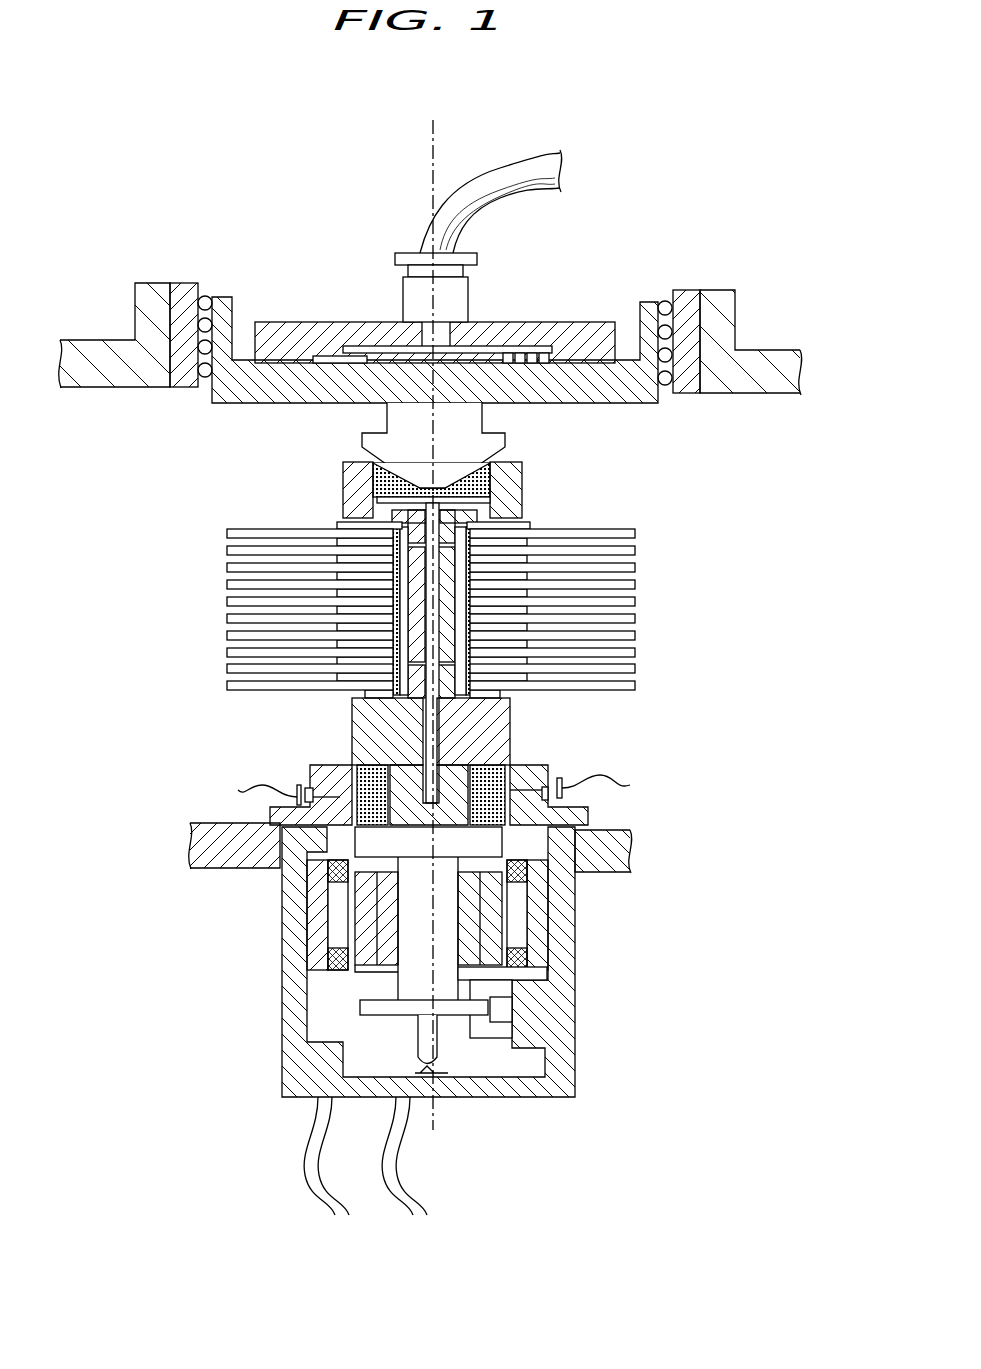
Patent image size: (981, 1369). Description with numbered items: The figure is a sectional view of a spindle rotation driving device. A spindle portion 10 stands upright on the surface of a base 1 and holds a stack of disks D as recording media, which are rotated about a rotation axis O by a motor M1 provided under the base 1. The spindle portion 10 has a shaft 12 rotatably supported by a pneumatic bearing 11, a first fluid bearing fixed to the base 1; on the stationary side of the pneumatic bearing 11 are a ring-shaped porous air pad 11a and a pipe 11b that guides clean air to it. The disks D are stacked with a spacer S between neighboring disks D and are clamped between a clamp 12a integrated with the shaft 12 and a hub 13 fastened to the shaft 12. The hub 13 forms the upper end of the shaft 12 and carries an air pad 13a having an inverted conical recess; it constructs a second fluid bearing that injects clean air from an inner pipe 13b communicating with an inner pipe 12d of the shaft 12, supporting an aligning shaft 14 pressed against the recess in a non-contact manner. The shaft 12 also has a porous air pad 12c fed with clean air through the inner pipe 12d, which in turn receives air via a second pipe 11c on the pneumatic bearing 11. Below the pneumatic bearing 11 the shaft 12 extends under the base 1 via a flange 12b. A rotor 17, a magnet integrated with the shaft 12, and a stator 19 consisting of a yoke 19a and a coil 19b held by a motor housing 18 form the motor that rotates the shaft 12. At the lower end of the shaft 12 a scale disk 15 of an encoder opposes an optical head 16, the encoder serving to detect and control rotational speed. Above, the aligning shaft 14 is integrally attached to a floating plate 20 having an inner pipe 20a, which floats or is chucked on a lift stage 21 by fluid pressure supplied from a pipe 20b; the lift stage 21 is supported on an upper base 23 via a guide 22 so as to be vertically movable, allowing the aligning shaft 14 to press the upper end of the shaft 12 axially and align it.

The base 1 is at (655, 857).
The spindle portion 10 is at (459, 625).
The pneumatic bearing 11 is at (459, 774).
The air pad 11a is at (497, 775).
The pipe 11b is at (632, 786).
The second pipe 11c is at (238, 790).
The shaft 12 is at (450, 605).
The clamp 12a is at (434, 732).
The flange 12b is at (368, 842).
The air pad 12c is at (387, 608).
The inner pipe 12d is at (352, 722).
The hub 13 is at (474, 475).
The air pad 13a is at (393, 480).
The inner pipe 13b is at (513, 480).
The aligning shaft 14 is at (412, 408).
The scale disk 15 is at (388, 1010).
The optical head 16 is at (503, 1025).
The rotor 17 is at (500, 922).
The motor housing 18 is at (557, 1097).
The stator 19 is at (337, 924).
The yoke 19a is at (315, 912).
The coil 19b is at (337, 970).
The floating plate 20 is at (595, 342).
The inner pipe 20a is at (520, 352).
The pipe 20b is at (517, 168).
The lift stage 21 is at (240, 377).
The guide 22 is at (667, 302).
The upper base 23 is at (770, 370).
The spacer S is at (530, 523).
The disks D is at (633, 535).
The motor M1 is at (421, 1020).
The rotation axis O is at (432, 624).